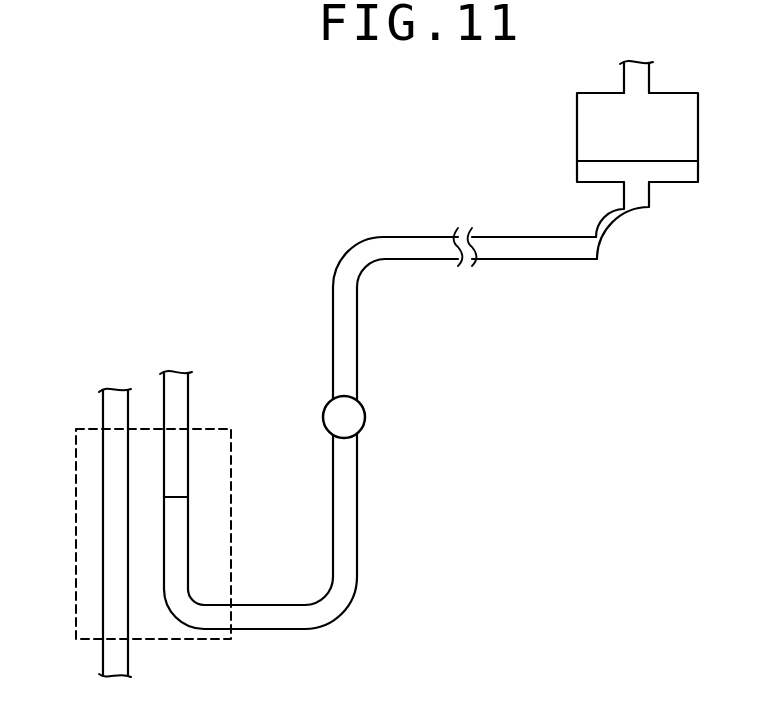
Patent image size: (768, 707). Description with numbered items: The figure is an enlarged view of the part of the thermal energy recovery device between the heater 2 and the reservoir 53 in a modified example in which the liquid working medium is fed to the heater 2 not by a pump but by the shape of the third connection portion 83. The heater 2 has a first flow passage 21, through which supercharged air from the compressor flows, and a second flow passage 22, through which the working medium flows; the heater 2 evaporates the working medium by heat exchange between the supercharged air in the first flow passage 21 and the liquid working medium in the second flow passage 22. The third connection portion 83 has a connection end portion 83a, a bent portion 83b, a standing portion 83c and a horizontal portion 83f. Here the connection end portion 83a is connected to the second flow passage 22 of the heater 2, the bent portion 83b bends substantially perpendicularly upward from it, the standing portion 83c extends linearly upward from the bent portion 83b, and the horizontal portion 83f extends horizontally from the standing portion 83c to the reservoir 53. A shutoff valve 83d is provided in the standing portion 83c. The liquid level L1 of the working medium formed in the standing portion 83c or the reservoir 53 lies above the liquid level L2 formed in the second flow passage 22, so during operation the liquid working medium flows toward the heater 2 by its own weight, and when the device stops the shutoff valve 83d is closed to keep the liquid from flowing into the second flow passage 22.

The heater 2 is at (167, 639).
The first flow passage 21 is at (103, 473).
The second flow passage 22 is at (188, 447).
The liquid level L2 is at (175, 497).
The third connection portion 83 is at (406, 418).
The connection end portion 83a is at (274, 620).
The bent portion 83b is at (337, 598).
The standing portion 83c is at (340, 358).
The shutoff valve 83d is at (365, 417).
The horizontal portion 83f is at (412, 253).
The reservoir 53 is at (683, 128).
The liquid level L1 is at (678, 161).